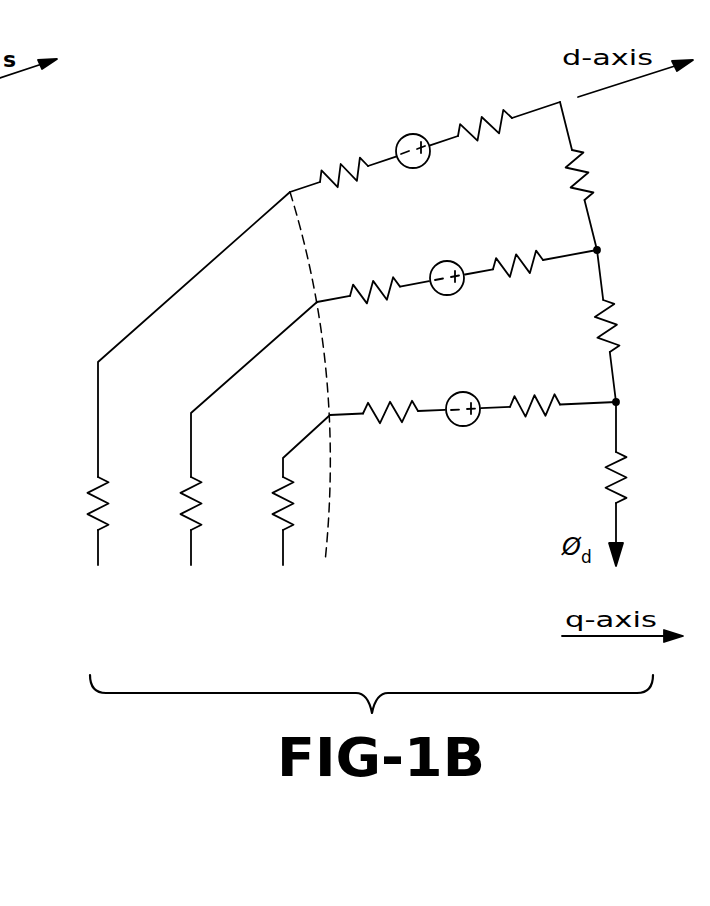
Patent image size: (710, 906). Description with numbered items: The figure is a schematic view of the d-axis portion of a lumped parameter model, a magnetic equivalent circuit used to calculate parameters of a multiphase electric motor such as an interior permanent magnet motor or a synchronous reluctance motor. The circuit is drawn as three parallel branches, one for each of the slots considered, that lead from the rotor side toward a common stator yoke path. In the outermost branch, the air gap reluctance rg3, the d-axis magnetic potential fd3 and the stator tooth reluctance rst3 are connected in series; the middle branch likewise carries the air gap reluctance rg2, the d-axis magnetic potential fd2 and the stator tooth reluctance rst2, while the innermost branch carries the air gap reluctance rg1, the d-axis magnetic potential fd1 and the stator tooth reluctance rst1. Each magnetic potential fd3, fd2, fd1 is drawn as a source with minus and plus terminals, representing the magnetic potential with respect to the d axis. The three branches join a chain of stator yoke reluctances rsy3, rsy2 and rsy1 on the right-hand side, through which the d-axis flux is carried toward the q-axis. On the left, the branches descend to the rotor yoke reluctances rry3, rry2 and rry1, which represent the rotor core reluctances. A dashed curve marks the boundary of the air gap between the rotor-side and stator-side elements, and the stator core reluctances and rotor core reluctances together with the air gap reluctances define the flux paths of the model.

The air gap reluctance rg3 is at (343, 156).
The stator tooth reluctance rst3 is at (477, 114).
The d-axis magnetic potential fd3 is at (426, 171).
The stator yoke reluctance rsy3 is at (608, 174).
The air gap reluctance rg2 is at (374, 274).
The stator tooth reluctance rst2 is at (518, 246).
The d-axis magnetic potential fd2 is at (454, 300).
The stator yoke reluctance rsy2 is at (634, 320).
The air gap reluctance rg1 is at (390, 396).
The stator tooth reluctance rst1 is at (535, 386).
The d-axis magnetic potential fd1 is at (464, 432).
The stator yoke reluctance rsy1 is at (646, 477).
The rotor yoke reluctance rry3 is at (69, 503).
The rotor yoke reluctance rry2 is at (162, 503).
The rotor yoke reluctance rry1 is at (258, 503).